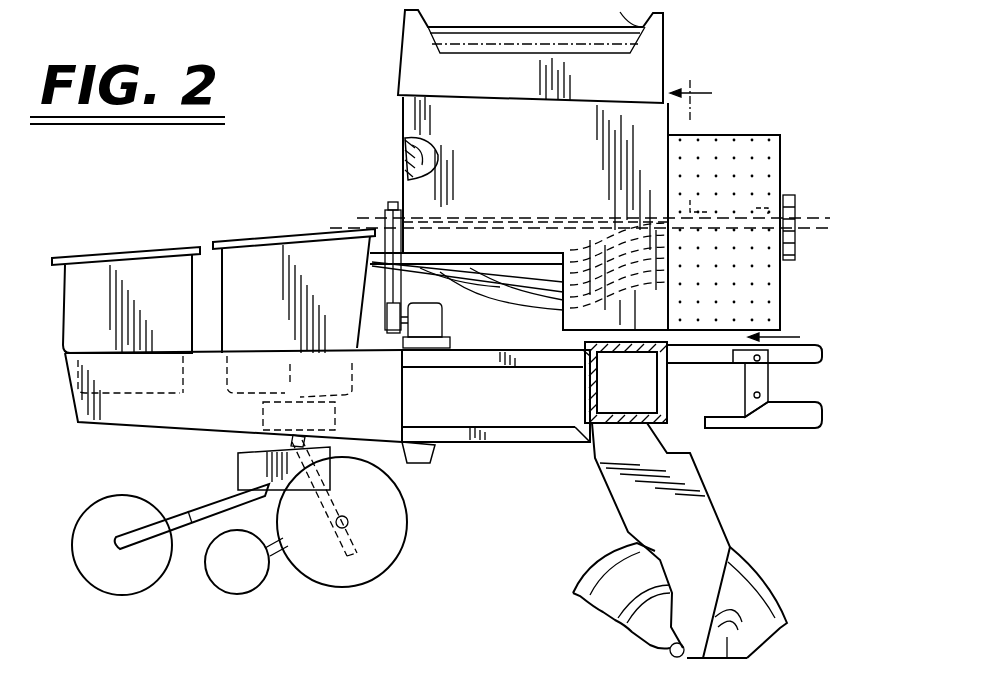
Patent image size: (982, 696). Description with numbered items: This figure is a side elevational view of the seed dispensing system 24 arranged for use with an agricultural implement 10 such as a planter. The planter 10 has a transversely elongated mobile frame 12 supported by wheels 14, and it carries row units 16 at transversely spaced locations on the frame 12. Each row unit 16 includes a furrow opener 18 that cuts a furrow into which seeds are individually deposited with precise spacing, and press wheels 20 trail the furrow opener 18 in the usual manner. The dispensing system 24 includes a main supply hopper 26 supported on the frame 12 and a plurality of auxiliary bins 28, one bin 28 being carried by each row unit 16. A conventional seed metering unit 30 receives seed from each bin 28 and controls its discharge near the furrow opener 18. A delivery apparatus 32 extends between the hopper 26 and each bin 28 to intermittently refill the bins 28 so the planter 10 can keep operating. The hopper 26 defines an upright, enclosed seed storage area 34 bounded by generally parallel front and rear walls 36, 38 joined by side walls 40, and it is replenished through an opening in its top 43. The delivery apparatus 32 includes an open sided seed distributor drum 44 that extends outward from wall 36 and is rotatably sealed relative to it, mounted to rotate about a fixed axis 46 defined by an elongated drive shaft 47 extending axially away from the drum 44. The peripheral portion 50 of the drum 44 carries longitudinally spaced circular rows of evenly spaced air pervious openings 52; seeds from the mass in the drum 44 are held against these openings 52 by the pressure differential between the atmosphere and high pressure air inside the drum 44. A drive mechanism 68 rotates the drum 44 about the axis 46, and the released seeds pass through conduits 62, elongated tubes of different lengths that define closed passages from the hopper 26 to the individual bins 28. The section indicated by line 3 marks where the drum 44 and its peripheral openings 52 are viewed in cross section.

The section line 3- 3 is at (738, 203).
The agricultural implement 10 is at (704, 500).
The mobile frame 12 is at (684, 434).
The wheels 14 is at (785, 609).
The row unit 16 is at (246, 405).
The furrow opener 18 is at (395, 532).
The press wheels 20 is at (148, 575).
The seed dispensing system 24 is at (591, 166).
The supply hopper 26 is at (520, 52).
The bin 28 is at (289, 228).
The seed metering unit 30 is at (263, 413).
The delivery apparatus 32 is at (757, 217).
The seed storage area 34 is at (408, 163).
The front wall 36 is at (672, 123).
The rear wall 38 is at (403, 105).
The side walls 40 is at (510, 162).
The top 43 is at (633, 3).
The seed distributor drum 44 is at (752, 232).
The fixed axis 46 is at (527, 220).
The drive shaft 47 is at (590, 220).
The peripheral portion 50 is at (748, 134).
The openings 52 is at (770, 307).
The conduit 62 is at (530, 303).
The drive mechanism 68 is at (433, 363).